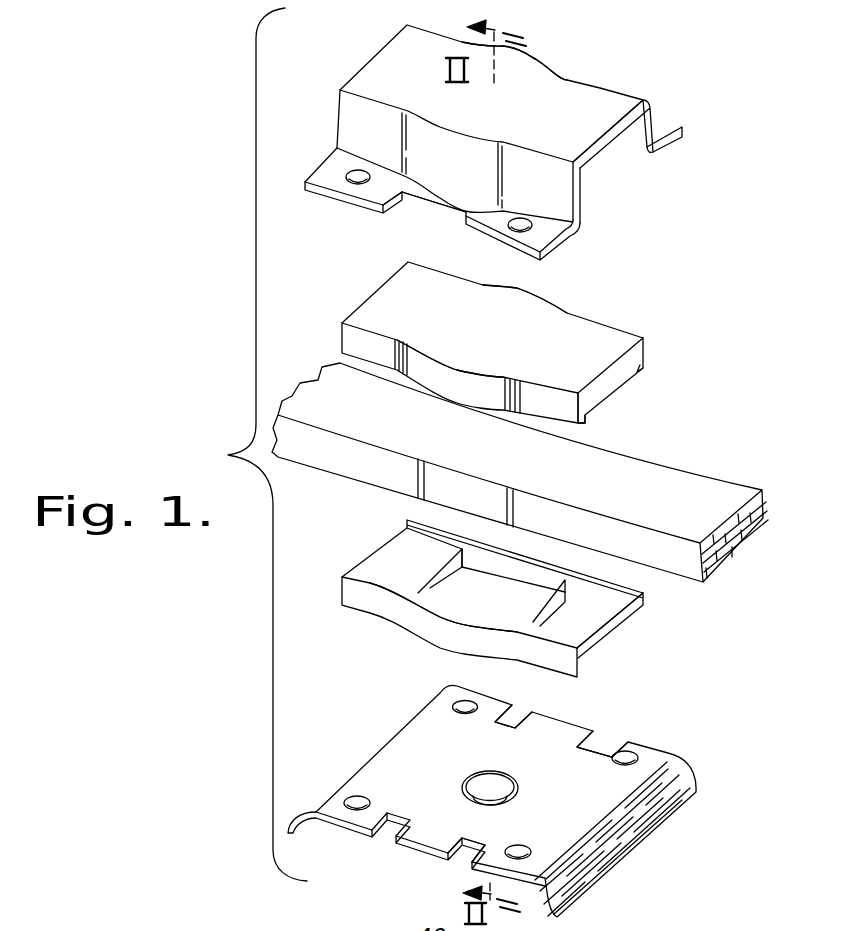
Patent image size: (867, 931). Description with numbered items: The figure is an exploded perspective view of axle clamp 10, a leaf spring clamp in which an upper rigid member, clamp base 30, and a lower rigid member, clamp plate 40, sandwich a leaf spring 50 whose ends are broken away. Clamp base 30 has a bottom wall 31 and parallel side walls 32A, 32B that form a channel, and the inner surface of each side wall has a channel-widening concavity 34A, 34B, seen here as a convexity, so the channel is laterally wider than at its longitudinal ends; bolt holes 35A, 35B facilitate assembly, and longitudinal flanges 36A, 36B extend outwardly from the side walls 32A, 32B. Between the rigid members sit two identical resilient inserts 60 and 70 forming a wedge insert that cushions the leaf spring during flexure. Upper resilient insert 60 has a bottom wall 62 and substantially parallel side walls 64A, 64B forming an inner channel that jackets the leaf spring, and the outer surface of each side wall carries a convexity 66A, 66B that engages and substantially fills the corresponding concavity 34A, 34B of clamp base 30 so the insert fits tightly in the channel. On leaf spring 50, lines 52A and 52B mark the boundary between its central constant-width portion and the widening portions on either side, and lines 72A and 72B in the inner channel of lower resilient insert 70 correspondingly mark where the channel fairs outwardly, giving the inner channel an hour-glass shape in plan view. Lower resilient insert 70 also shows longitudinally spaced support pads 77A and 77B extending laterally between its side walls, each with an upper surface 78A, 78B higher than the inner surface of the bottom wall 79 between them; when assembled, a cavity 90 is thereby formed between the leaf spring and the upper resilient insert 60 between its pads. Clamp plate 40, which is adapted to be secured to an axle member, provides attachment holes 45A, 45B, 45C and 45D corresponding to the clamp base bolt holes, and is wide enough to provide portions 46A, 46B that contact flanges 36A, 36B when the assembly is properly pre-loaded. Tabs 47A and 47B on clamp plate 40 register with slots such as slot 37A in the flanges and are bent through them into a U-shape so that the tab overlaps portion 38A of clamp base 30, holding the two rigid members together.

The axle clamp 10 is at (229, 455).
The clamp base 30 is at (506, 143).
The bottom wall 31 is at (403, 60).
The side wall 32A is at (553, 193).
The side wall 32B is at (635, 147).
The channel-widening concavity 34A is at (455, 150).
The channel-widening concavity 34B is at (547, 60).
The bolt hole 35A is at (523, 228).
The bolt hole 35B is at (358, 178).
The longitudinal flange 36A is at (325, 173).
The longitudinal flange 36B is at (667, 125).
The slot 37A is at (395, 207).
The portion of clamp base 38A is at (430, 197).
The resilient insert 60 is at (511, 365).
The bottom wall 62 is at (382, 302).
The side wall 64A is at (553, 403).
The side wall 64B is at (637, 372).
The convexity 66A is at (450, 378).
The convexity 66B is at (533, 293).
The leaf spring 50 is at (520, 472).
The line 52A is at (513, 507).
The line 52B is at (417, 477).
The resilient insert 70 is at (509, 593).
The line 72A is at (571, 588).
The line 72B is at (479, 562).
The support pad 77A is at (600, 647).
The support pad 77B is at (400, 542).
The upper surface 78A is at (613, 613).
The upper surface 78B is at (367, 577).
The bottom wall 79 is at (455, 593).
The clamp plate 40 is at (522, 790).
The attachment hole 45A is at (521, 845).
The attachment hole 45B is at (353, 798).
The attachment hole 45C is at (620, 747).
The attachment hole 45D is at (452, 709).
The portion of clamp plate 46A is at (495, 852).
The portion of clamp plate 46B is at (617, 737).
The tab 47A is at (430, 837).
The tab 47B is at (545, 705).
The cavity 90 is at (351, 927).